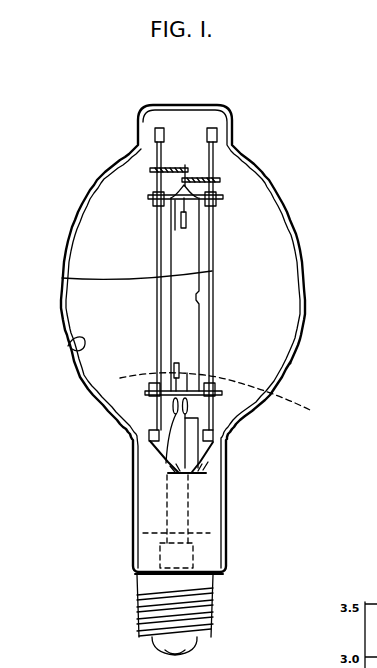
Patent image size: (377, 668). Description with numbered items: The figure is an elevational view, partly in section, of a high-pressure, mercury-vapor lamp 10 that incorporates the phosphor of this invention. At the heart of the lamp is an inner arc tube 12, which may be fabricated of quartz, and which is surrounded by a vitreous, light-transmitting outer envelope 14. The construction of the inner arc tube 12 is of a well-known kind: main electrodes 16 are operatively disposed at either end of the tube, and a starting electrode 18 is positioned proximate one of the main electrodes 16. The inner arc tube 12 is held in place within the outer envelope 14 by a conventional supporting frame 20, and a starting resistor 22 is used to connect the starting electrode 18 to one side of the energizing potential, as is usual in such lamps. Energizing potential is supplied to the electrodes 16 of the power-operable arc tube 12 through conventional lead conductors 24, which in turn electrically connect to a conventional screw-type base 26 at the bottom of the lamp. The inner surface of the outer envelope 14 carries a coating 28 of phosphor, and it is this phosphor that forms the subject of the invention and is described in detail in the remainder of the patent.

The high-pressure mercury-vapor lamp 10 is at (299, 234).
The inner arc tube 12 is at (186, 345).
The outer envelope 14 is at (291, 363).
The main electrodes 16 is at (153, 220).
The starting electrode 18 is at (228, 396).
The supporting frame 20 is at (150, 265).
The starting resistor 22 is at (224, 453).
The lead conductors 24 is at (200, 519).
The screw-type base 26 is at (222, 591).
The coating of phosphor 28 is at (70, 345).